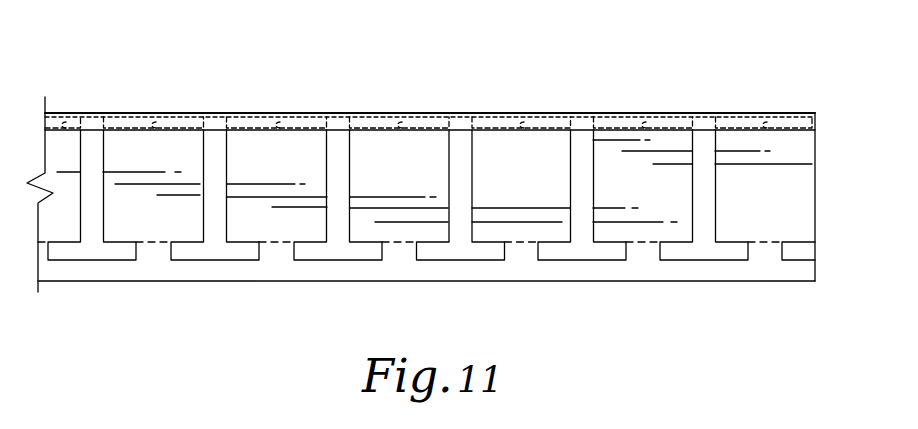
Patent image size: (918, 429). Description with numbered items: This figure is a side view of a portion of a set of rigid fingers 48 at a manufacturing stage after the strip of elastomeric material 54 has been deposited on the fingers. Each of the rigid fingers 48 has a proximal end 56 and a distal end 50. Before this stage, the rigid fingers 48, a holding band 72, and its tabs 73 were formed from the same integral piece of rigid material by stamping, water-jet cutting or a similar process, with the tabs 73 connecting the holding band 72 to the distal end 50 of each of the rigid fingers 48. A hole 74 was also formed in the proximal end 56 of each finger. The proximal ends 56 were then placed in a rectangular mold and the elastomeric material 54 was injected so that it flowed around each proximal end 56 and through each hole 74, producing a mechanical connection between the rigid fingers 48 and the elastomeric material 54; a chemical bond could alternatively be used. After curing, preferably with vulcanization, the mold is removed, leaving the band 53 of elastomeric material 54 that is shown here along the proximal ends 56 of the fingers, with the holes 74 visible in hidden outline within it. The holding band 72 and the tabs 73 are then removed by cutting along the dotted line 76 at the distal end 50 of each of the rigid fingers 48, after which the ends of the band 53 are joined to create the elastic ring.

The rigid fingers 48 is at (503, 188).
The distal end 50 is at (182, 240).
The band 53 is at (413, 103).
The elastomeric material 54 is at (458, 115).
The proximal end 56 is at (300, 117).
The holding band 72 is at (275, 273).
The tabs 73 is at (157, 250).
The hole 74 is at (152, 117).
The dotted line 76 is at (409, 242).